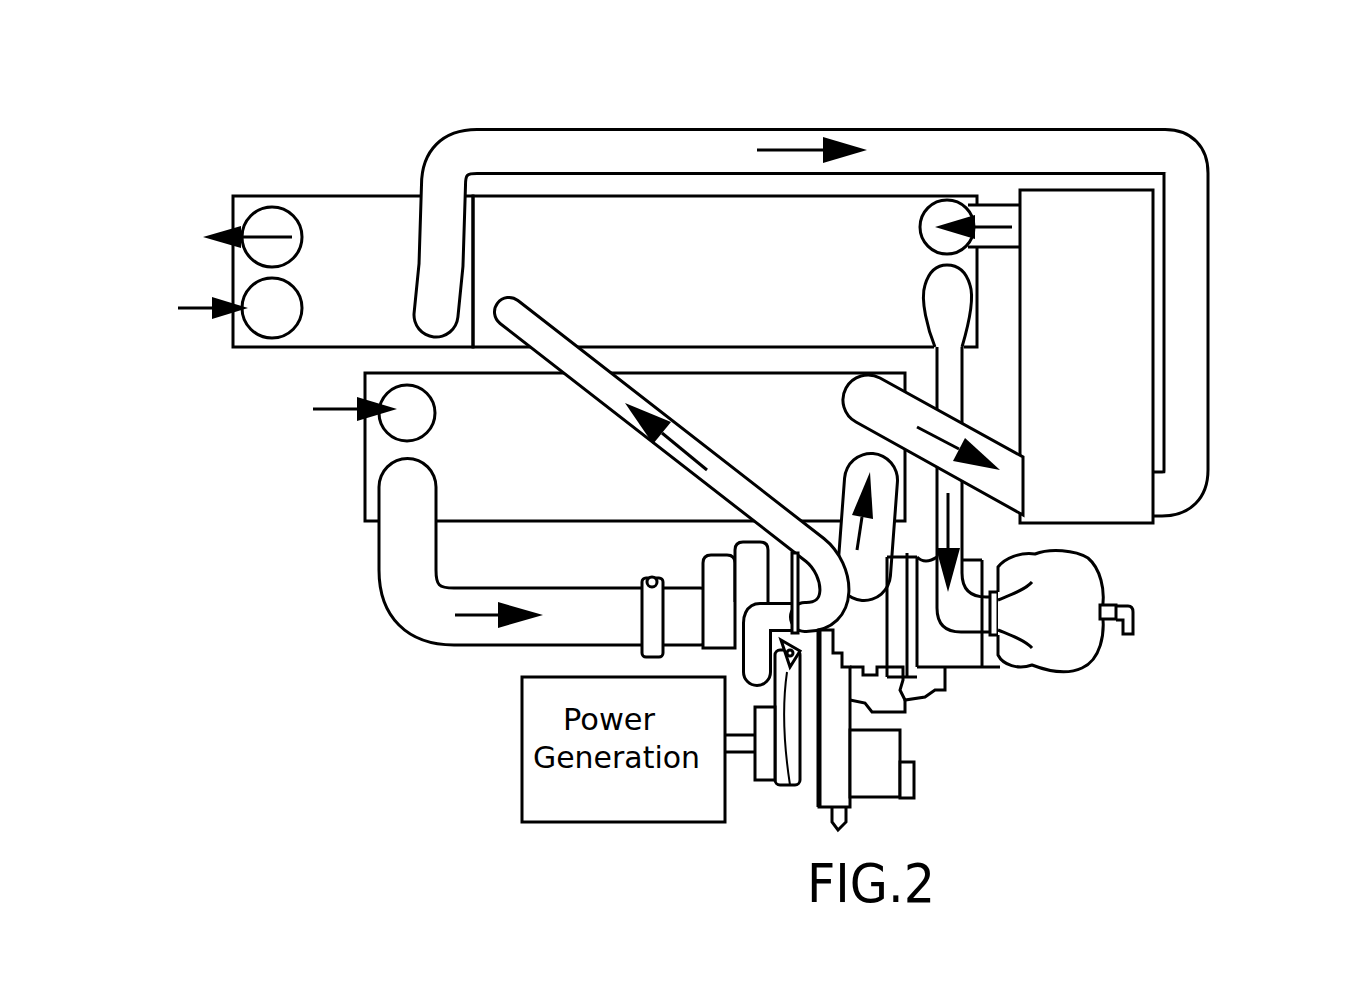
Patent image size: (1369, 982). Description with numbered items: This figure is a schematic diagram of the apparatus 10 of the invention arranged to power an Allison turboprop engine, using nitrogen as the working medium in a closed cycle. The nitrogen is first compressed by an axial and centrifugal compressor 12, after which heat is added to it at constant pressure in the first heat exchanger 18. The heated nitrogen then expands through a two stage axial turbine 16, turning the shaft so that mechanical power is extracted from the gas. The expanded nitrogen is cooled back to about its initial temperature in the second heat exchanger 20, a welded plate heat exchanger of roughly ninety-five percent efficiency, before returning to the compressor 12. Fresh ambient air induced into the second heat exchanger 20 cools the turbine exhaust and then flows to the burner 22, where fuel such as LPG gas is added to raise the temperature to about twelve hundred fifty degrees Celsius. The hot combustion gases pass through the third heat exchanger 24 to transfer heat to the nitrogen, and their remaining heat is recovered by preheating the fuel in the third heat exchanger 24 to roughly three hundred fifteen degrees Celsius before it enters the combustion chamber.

The apparatus 10 is at (1250, 72).
The axial and centrifugal compressor 12 is at (792, 670).
The two stage axial turbine 16 is at (1102, 666).
The first heat exchanger 18 is at (749, 273).
The second heat exchanger 20 is at (586, 447).
The burner 22 is at (1153, 293).
The third heat exchanger 24 is at (313, 236).